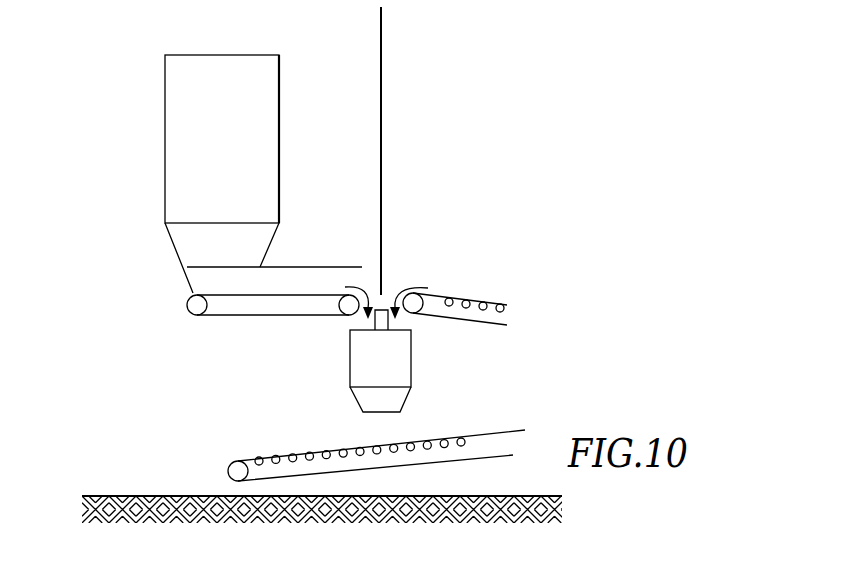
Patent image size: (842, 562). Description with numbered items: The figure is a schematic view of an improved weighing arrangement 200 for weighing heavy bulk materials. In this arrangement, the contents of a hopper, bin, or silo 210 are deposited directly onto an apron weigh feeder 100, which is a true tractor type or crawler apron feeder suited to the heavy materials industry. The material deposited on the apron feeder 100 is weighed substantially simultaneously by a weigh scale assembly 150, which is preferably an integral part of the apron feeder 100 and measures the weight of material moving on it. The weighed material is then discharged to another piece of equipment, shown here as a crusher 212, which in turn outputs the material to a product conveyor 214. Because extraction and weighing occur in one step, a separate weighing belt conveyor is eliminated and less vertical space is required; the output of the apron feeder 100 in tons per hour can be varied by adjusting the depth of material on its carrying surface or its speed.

The improved weighing arrangement 200 is at (141, 97).
The hopper, bin, or silo 210 is at (280, 137).
The apron weigh feeder 100 is at (331, 292).
The weigh scale assembly 150 is at (299, 306).
The crusher 212 is at (392, 353).
The product conveyor 214 is at (455, 440).